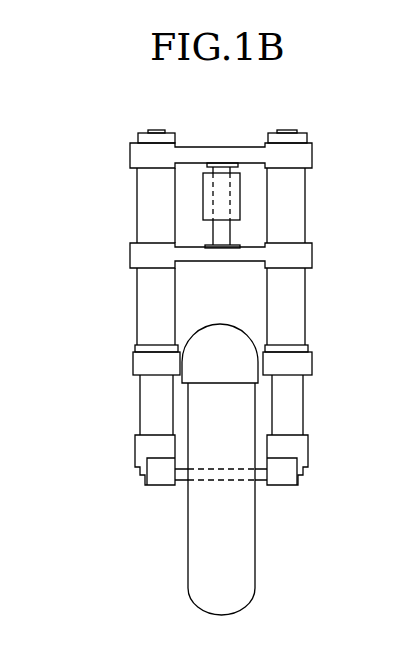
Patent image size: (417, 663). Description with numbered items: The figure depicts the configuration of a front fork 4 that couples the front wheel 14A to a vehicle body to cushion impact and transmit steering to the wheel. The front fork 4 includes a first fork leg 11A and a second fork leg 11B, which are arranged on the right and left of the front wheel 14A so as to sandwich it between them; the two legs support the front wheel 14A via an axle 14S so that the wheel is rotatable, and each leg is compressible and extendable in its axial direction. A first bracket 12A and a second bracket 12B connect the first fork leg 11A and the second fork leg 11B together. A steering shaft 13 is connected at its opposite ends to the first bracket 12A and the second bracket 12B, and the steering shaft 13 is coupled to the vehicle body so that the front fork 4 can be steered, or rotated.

The front fork 4 is at (102, 129).
The first fork leg 11A is at (137, 325).
The second fork leg 11B is at (306, 326).
The first bracket 12A is at (312, 156).
The second bracket 12B is at (312, 254).
The steering shaft 13 is at (230, 229).
The front wheel 14A is at (257, 556).
The axle 14S is at (178, 488).